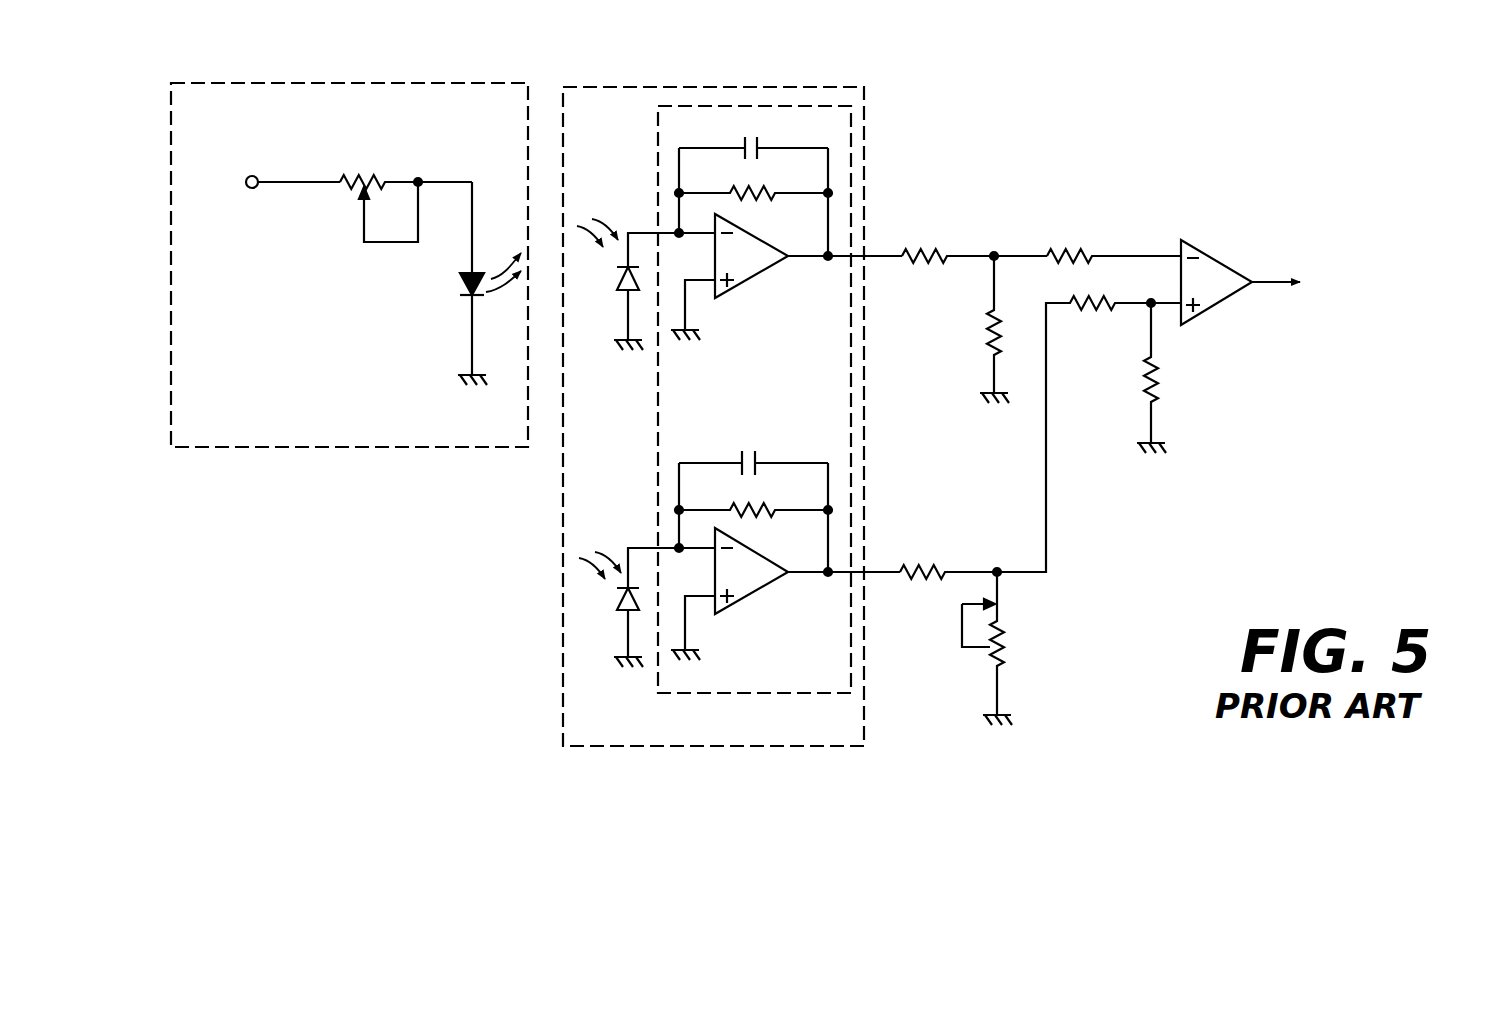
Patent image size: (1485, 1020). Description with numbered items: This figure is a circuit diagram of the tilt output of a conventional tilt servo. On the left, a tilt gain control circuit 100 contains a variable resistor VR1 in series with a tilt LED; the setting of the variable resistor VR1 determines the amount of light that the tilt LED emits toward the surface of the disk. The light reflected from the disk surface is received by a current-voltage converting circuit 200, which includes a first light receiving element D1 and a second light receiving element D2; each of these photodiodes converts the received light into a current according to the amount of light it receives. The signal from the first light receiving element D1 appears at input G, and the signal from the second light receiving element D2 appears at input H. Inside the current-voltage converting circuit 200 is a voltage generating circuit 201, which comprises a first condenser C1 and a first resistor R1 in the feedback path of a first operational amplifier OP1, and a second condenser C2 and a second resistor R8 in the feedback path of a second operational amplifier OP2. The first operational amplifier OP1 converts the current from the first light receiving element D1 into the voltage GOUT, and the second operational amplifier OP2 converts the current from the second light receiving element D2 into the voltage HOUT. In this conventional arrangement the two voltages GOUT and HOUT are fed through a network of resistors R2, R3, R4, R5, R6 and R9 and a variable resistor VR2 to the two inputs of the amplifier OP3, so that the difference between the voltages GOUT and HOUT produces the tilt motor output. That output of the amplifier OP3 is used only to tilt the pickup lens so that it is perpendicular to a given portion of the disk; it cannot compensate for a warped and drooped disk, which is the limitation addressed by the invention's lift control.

The tilt gain control circuit 100 is at (380, 102).
The current-voltage converting circuit 200 is at (678, 93).
The voltage generating circuit 201 is at (735, 695).
The variable resistor VR1 is at (359, 194).
The tilt LED is at (466, 283).
The first light receiving element D1 is at (628, 284).
The G signal input G is at (648, 215).
The first condenser C1 is at (753, 183).
The first resistor R1 is at (753, 209).
The first operational amplifier OP1 is at (748, 260).
The voltage Gout GOUT is at (866, 257).
The resistor R2 is at (974, 243).
The resistor R3 is at (981, 329).
The resistor R4 is at (1114, 243).
The resistor R5 is at (1113, 434).
The resistor R6 is at (1166, 378).
The amplifier OP3 is at (1227, 265).
The second light receiving element D2 is at (629, 607).
The H signal input H is at (643, 539).
The second condenser C2 is at (753, 496).
The second resistor R8 is at (753, 523).
The second operational amplifier OP2 is at (767, 582).
The voltage Hout HOUT is at (865, 574).
The resistor R9 is at (973, 558).
The variable resistor VR2 is at (1010, 648).